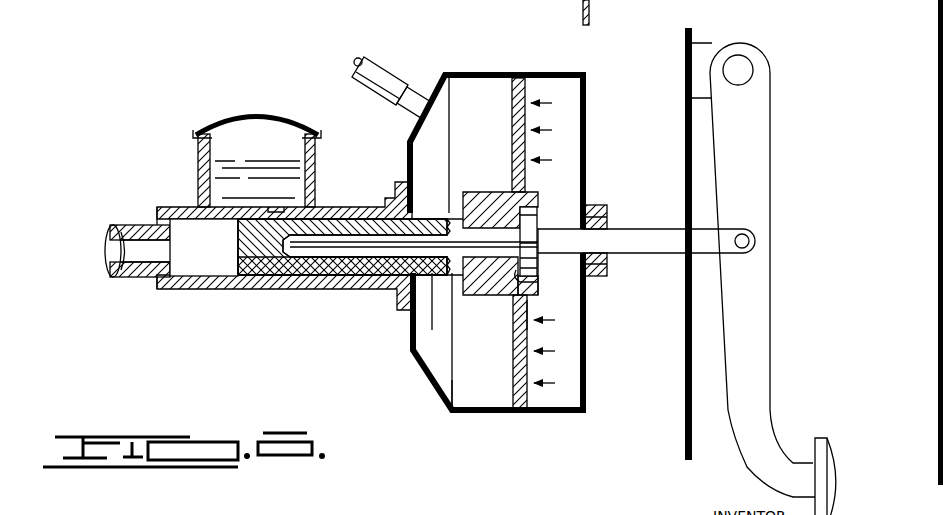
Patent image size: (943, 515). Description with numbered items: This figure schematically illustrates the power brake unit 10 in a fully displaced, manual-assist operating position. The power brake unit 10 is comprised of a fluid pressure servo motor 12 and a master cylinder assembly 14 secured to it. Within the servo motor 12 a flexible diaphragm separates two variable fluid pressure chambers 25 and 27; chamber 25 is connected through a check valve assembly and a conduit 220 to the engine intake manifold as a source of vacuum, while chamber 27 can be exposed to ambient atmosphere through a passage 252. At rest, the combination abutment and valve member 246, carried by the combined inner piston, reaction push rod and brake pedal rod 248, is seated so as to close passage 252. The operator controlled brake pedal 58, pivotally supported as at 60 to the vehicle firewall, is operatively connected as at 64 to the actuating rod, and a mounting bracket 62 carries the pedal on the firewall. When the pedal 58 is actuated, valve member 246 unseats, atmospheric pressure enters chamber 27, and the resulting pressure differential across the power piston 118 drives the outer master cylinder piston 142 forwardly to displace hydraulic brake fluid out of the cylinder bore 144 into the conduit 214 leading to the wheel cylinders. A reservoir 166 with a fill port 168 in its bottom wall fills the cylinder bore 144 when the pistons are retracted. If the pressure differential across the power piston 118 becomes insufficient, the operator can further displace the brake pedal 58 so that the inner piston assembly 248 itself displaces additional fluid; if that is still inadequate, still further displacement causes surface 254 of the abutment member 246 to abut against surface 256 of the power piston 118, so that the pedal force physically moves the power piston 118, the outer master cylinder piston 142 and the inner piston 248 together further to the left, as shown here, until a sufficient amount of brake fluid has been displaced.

The power brake unit 10 is at (535, 234).
The fluid pressure servo motor 12 is at (591, 103).
The master cylinder assembly 14 is at (329, 173).
The fluid pressure chamber 25 is at (507, 380).
The fluid pressure chamber 27 is at (578, 340).
The brake pedal 58 is at (837, 440).
The pivotal support 60 is at (744, 68).
The mounting bracket 62 is at (688, 432).
The operative connection 64 is at (746, 239).
The power piston 118 is at (508, 148).
The outer master cylinder piston 142 is at (432, 275).
The cylinder bore 144 is at (198, 262).
The reservoir 166 is at (194, 171).
The fill port 168 is at (276, 210).
The conduit 214 is at (162, 260).
The conduit 220 is at (380, 62).
The combination abutment and valve member 246 is at (563, 184).
The combined inner piston, reaction push rod and brake pedal rod 248 is at (330, 274).
The passage 252 is at (606, 222).
The surface 254 is at (510, 273).
The surface 256 is at (514, 218).